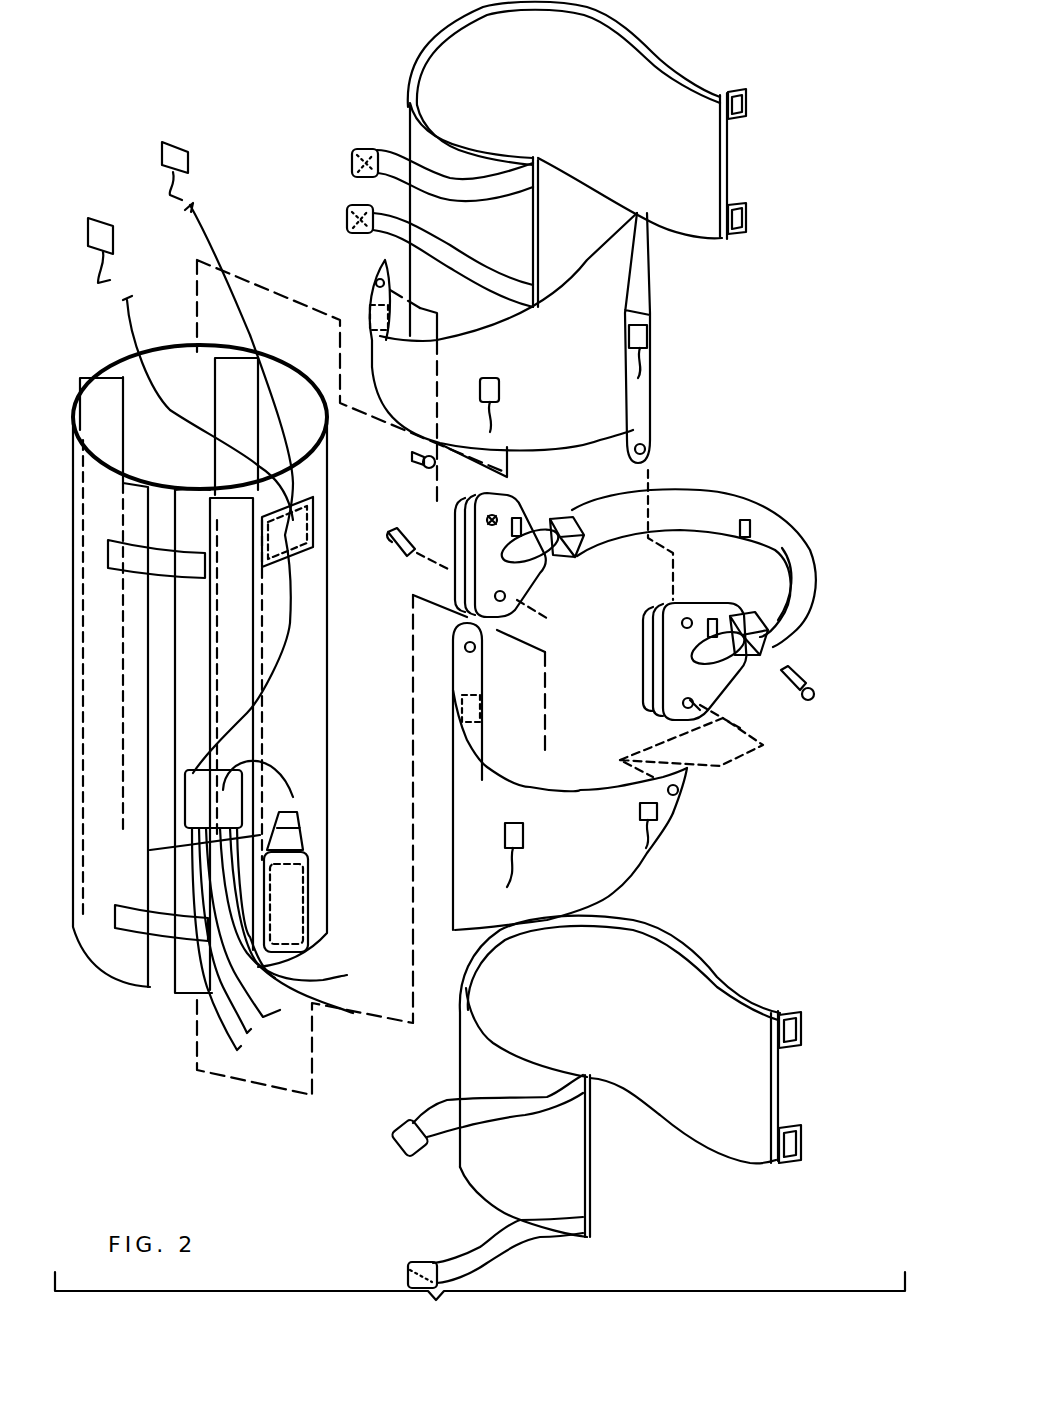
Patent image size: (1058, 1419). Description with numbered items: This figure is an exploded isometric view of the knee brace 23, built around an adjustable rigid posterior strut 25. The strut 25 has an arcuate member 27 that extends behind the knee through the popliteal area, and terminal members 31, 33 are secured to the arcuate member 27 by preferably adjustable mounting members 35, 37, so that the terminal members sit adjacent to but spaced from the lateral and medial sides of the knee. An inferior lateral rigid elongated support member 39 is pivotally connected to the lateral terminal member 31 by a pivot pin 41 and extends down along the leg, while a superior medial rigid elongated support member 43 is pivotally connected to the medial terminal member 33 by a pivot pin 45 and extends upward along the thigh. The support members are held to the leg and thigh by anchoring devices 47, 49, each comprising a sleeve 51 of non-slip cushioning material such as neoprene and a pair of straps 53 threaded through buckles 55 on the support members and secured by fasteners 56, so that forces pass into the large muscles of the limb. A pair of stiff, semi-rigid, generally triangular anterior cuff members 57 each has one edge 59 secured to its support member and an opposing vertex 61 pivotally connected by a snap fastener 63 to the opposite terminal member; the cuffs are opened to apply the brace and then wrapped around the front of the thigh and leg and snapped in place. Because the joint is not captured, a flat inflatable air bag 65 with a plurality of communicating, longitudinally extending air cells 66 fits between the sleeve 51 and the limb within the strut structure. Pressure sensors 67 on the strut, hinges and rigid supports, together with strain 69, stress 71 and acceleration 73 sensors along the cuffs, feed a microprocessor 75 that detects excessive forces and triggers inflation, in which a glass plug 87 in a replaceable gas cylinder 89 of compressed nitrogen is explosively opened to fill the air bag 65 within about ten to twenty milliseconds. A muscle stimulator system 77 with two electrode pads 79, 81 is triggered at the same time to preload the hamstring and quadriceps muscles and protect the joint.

The knee brace 23 is at (393, 596).
The adjustable rigid posterior strut 25 is at (826, 622).
The arcuate member 27 is at (817, 585).
The lateral terminal member 31 is at (520, 590).
The medial terminal member 33 is at (655, 640).
The mounting member 35 is at (565, 560).
The mounting member 37 is at (775, 650).
The inferior lateral rigid elongated support member 39 is at (470, 670).
The pivot pin 41 is at (400, 532).
The superior medial rigid elongated support member 43 is at (651, 430).
The pivot pin 45 is at (814, 698).
The anchoring device 47 is at (440, 1038).
The anchoring device 49 is at (800, 216).
The sleeve 51 is at (633, 72).
The straps 53 is at (473, 250).
The buckles 55 is at (748, 103).
The Velcro fasteners 56 is at (370, 147).
The anterior cuff members 57 is at (393, 395).
The edge 59 is at (651, 312).
The vertex 61 is at (377, 272).
The snap fastener 63 is at (410, 458).
The inflatable air bag 65 is at (322, 678).
The air cells 66 is at (100, 398).
The pressure sensors 67 is at (518, 518).
The strain sensors 69 is at (365, 300).
The stress sensors 71 is at (500, 390).
The acceleration sensors 73 is at (648, 340).
The microprocessor 75 is at (185, 795).
The muscle stimulator system 77 is at (313, 513).
The electrode pad 79 is at (97, 218).
The electrode pad 81 is at (175, 146).
The glass plug 87 is at (300, 822).
The replaceable gas cylinder 89 is at (308, 870).